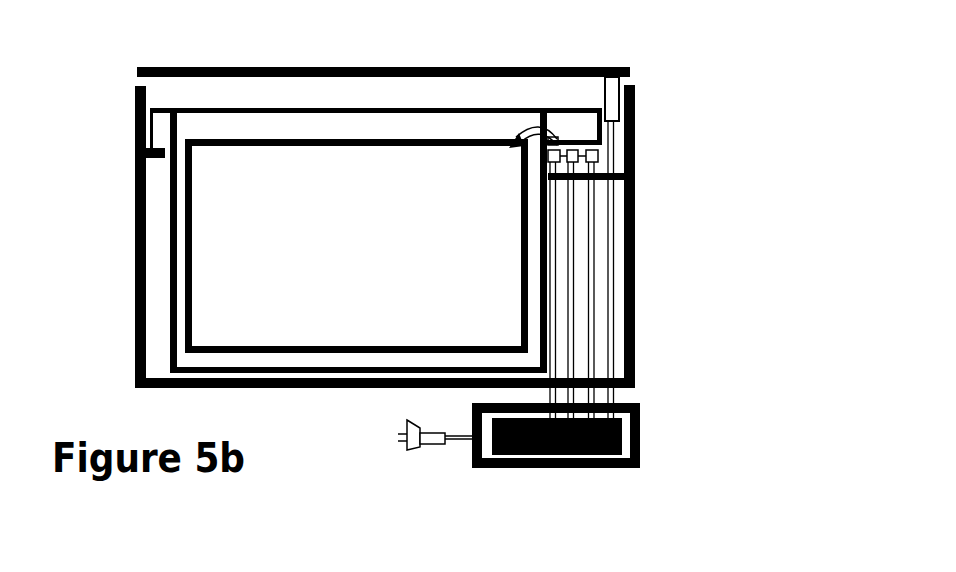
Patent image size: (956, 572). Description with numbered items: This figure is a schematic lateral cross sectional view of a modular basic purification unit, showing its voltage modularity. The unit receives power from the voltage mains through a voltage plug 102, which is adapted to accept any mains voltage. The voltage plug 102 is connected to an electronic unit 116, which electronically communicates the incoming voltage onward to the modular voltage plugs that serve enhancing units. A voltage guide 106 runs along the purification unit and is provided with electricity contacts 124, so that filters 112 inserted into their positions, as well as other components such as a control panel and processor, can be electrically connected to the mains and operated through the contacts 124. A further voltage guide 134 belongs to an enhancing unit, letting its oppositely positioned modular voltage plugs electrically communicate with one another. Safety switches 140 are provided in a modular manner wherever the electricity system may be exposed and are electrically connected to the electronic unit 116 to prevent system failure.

The voltage plug 102 is at (408, 450).
The voltage guide 106 is at (573, 265).
The filters 112 is at (358, 162).
The electronic unit 116 is at (623, 438).
The electricity contacts 124 is at (538, 116).
The voltage guide 134 is at (588, 163).
The safety switches 140 is at (613, 103).